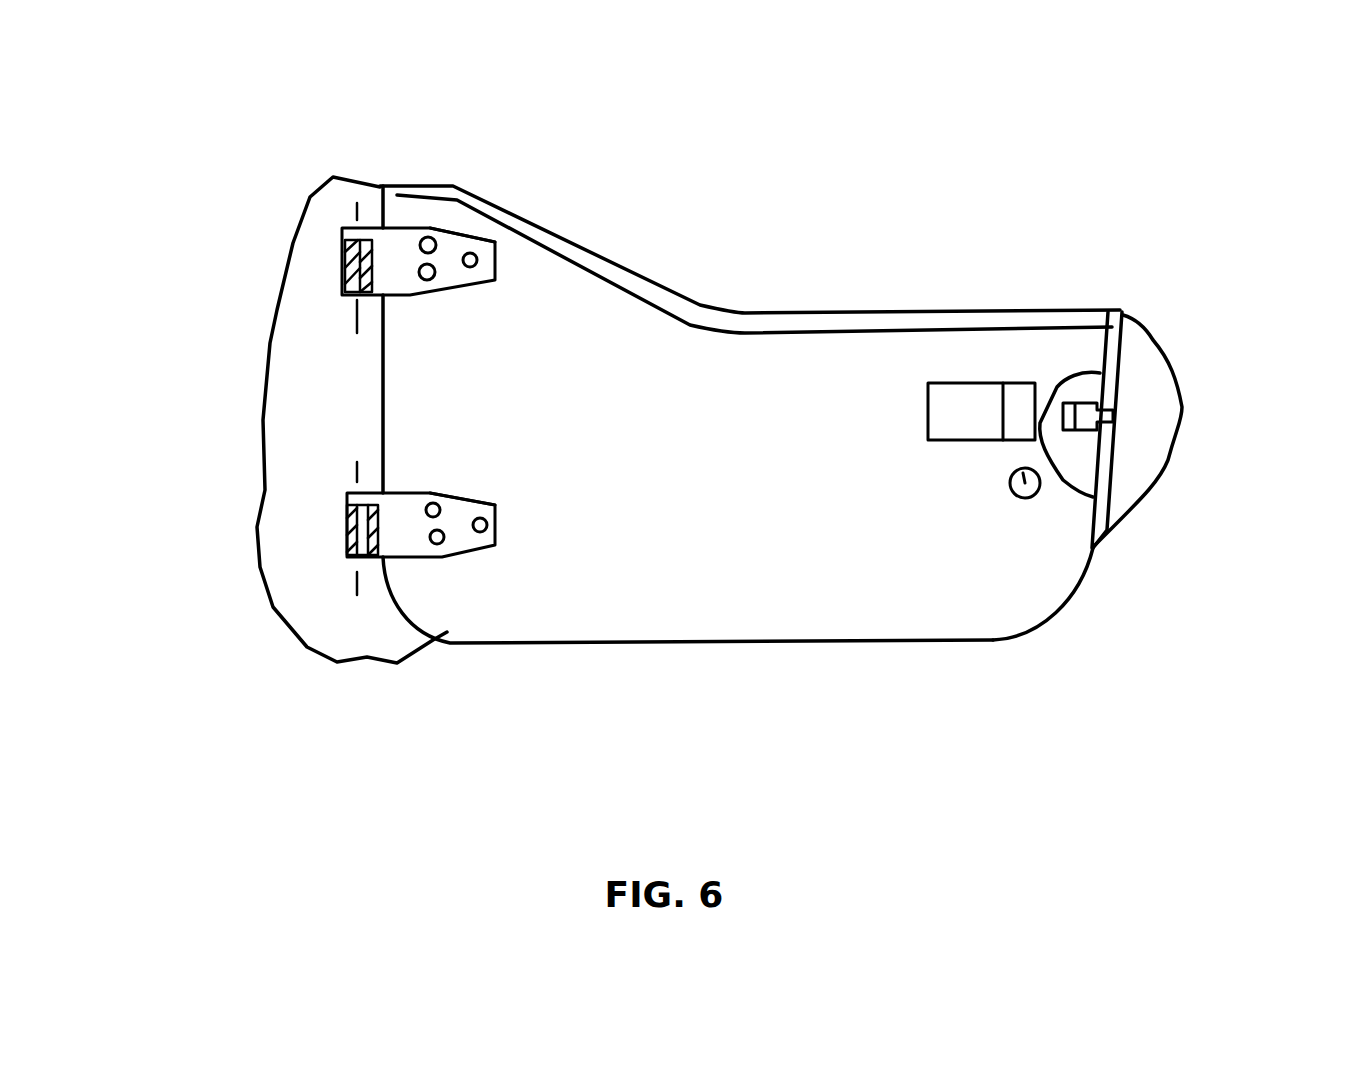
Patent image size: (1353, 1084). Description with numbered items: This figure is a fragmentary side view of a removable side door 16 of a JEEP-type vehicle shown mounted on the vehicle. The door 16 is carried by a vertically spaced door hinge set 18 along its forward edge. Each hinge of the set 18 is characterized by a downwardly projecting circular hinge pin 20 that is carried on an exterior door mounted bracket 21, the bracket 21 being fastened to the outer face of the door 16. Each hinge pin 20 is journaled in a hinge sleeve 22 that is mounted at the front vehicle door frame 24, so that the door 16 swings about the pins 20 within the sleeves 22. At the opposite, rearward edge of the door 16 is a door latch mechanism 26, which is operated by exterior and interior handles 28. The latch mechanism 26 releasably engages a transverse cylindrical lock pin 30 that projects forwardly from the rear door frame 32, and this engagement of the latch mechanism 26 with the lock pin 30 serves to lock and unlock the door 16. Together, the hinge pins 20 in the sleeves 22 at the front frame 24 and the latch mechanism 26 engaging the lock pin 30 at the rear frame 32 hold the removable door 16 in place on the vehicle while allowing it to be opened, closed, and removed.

The side door 16 is at (1060, 605).
The door hinge set 18 is at (455, 510).
The hinge pin 20 is at (360, 540).
The door mounted bracket 21 is at (458, 547).
The hinge sleeve 22 is at (350, 530).
The front vehicle door frame 24 is at (302, 388).
The door latch mechanism 26 is at (1087, 385).
The handle 28 is at (963, 383).
The lock pin 30 is at (1113, 410).
The rear door frame 32 is at (1160, 440).